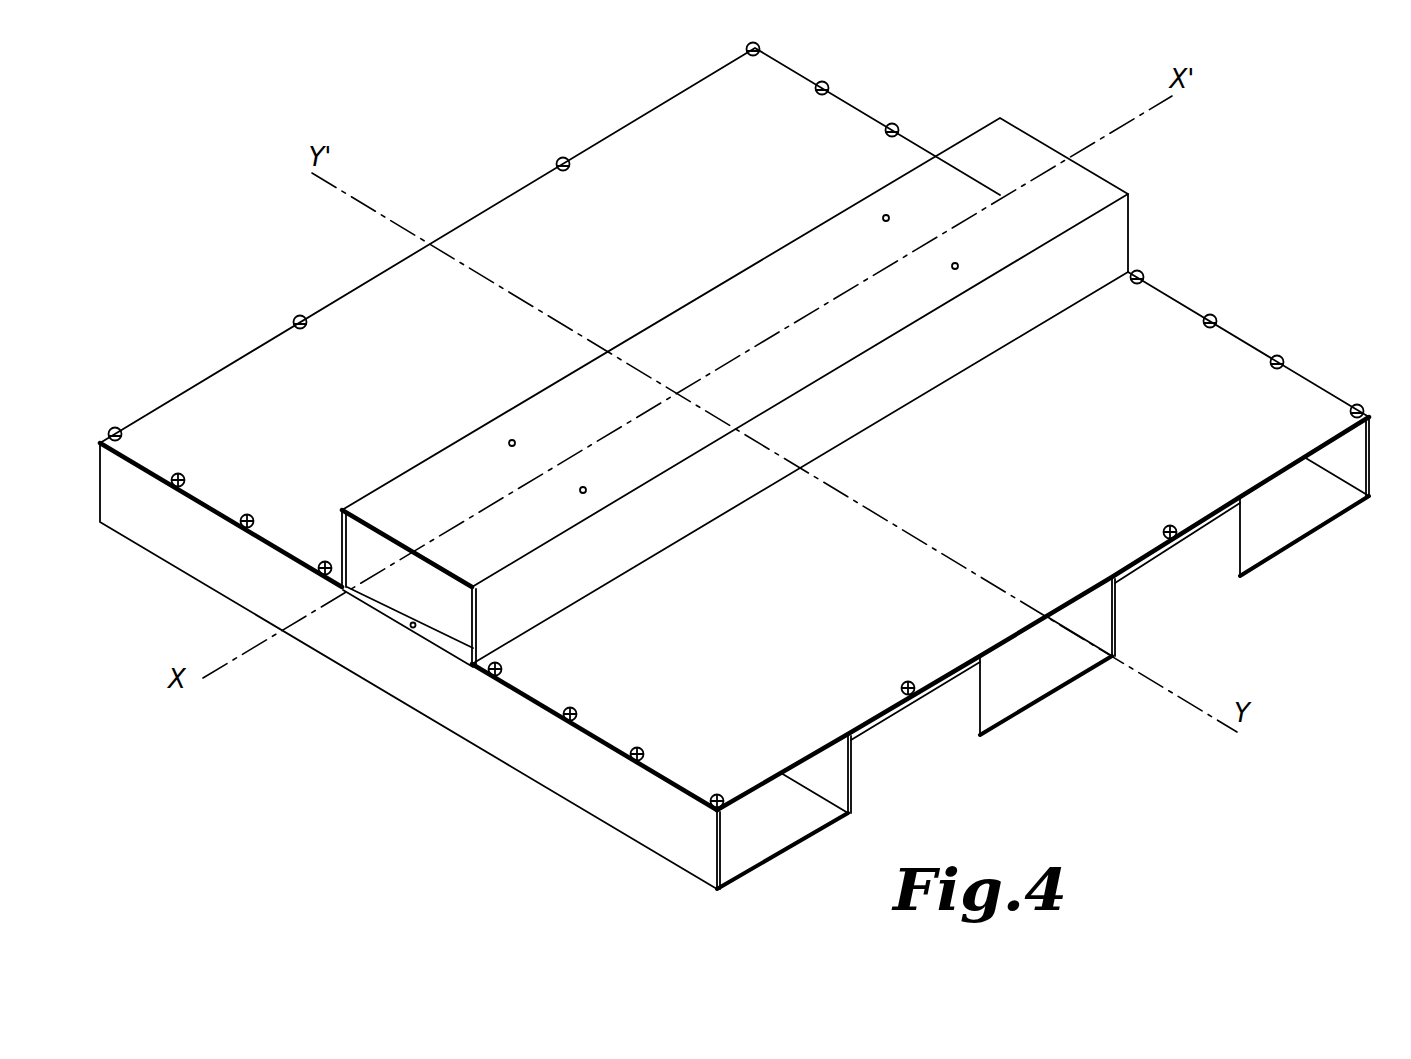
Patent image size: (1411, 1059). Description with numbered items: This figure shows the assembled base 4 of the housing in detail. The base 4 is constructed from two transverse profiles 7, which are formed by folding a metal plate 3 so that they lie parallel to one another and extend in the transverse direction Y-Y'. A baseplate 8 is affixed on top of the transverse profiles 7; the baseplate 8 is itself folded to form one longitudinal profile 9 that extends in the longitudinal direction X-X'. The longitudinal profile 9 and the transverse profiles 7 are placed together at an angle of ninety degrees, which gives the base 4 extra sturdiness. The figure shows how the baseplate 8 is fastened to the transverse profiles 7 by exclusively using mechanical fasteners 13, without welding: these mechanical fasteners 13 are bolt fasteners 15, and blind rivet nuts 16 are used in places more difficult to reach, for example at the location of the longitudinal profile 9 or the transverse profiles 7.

The metal plate 3 is at (1282, 398).
The base 4 is at (298, 99).
The transverse profiles 7 is at (878, 726).
The baseplate 8 is at (503, 243).
The longitudinal profile 9 is at (463, 550).
The mechanical fasteners 13 is at (567, 152).
The bolt fasteners 15 is at (750, 44).
The blind rivet nuts 16 is at (829, 88).